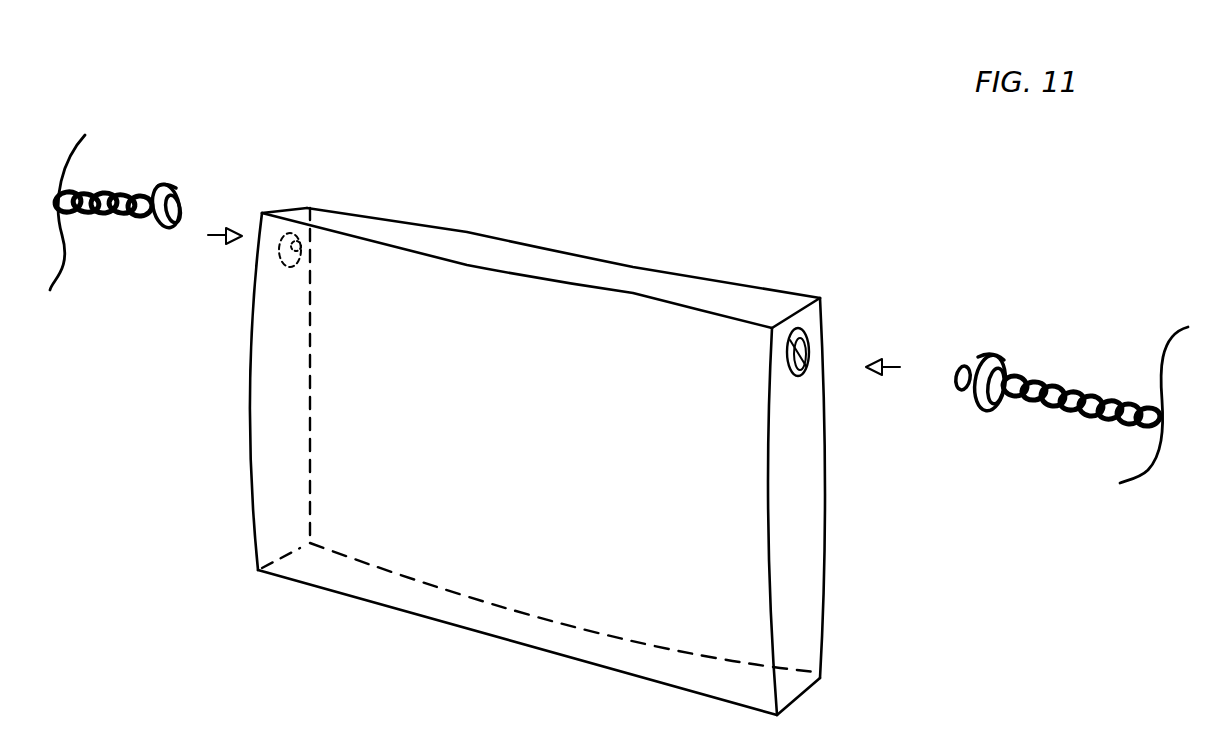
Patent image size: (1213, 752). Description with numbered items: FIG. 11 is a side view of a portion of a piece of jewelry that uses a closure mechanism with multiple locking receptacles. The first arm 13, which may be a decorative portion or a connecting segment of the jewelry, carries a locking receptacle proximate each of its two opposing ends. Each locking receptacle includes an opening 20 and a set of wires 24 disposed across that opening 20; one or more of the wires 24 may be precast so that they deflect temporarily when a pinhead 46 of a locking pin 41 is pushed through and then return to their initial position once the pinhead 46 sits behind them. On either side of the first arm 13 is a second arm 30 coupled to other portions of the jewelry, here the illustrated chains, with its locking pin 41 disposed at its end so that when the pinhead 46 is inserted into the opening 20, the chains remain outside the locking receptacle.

The first arm 13 is at (537, 461).
The opening 20 is at (298, 243).
The wires 24 is at (283, 263).
The second arm 30 is at (153, 157).
The locking pin 41 is at (968, 392).
The pinhead 46 is at (183, 220).